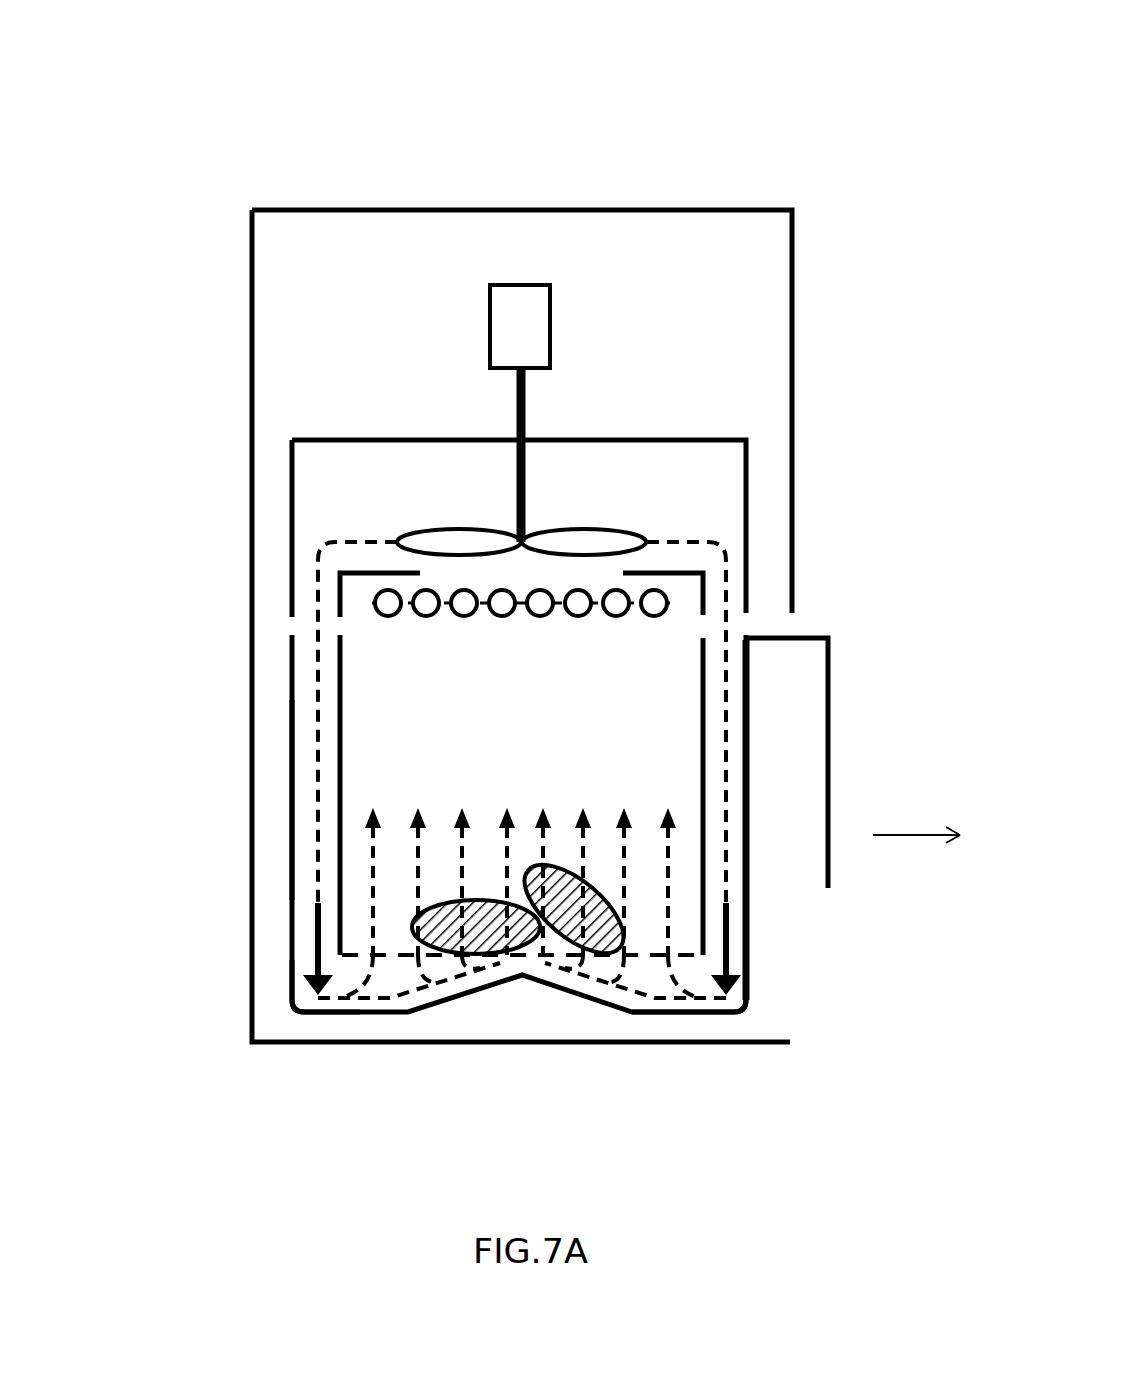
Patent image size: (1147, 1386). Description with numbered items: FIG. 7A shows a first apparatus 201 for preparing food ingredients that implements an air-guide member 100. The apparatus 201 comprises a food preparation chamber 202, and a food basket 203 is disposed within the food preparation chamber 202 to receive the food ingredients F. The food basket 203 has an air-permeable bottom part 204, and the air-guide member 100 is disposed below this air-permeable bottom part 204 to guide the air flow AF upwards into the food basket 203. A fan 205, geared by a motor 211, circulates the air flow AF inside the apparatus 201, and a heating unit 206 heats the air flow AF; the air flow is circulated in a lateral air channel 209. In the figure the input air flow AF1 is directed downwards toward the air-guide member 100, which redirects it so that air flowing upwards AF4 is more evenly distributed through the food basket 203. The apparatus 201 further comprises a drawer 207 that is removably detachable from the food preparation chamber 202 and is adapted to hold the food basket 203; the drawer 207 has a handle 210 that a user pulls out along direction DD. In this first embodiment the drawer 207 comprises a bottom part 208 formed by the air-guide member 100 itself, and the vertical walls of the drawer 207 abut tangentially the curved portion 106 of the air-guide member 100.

The apparatus 201 is at (772, 78).
The motor 211 is at (515, 285).
The fan 205 is at (460, 530).
The heating unit 206 is at (378, 596).
The food preparation chamber 202 is at (412, 662).
The food basket 203 is at (343, 770).
The lateral air channel 209 is at (302, 858).
The curved portion 106 is at (295, 1005).
The air-permeable bottom part 204 is at (410, 960).
The air-guide member 100 is at (525, 1006).
The bottom part 208 is at (712, 1015).
The drawer 207 is at (748, 934).
The handle 210 is at (830, 742).
The air flow AF is at (330, 541).
The input air flow AF1 is at (320, 948).
The air flowing upwards AF4 is at (575, 810).
The food ingredients F is at (470, 900).
The direction DD is at (916, 816).